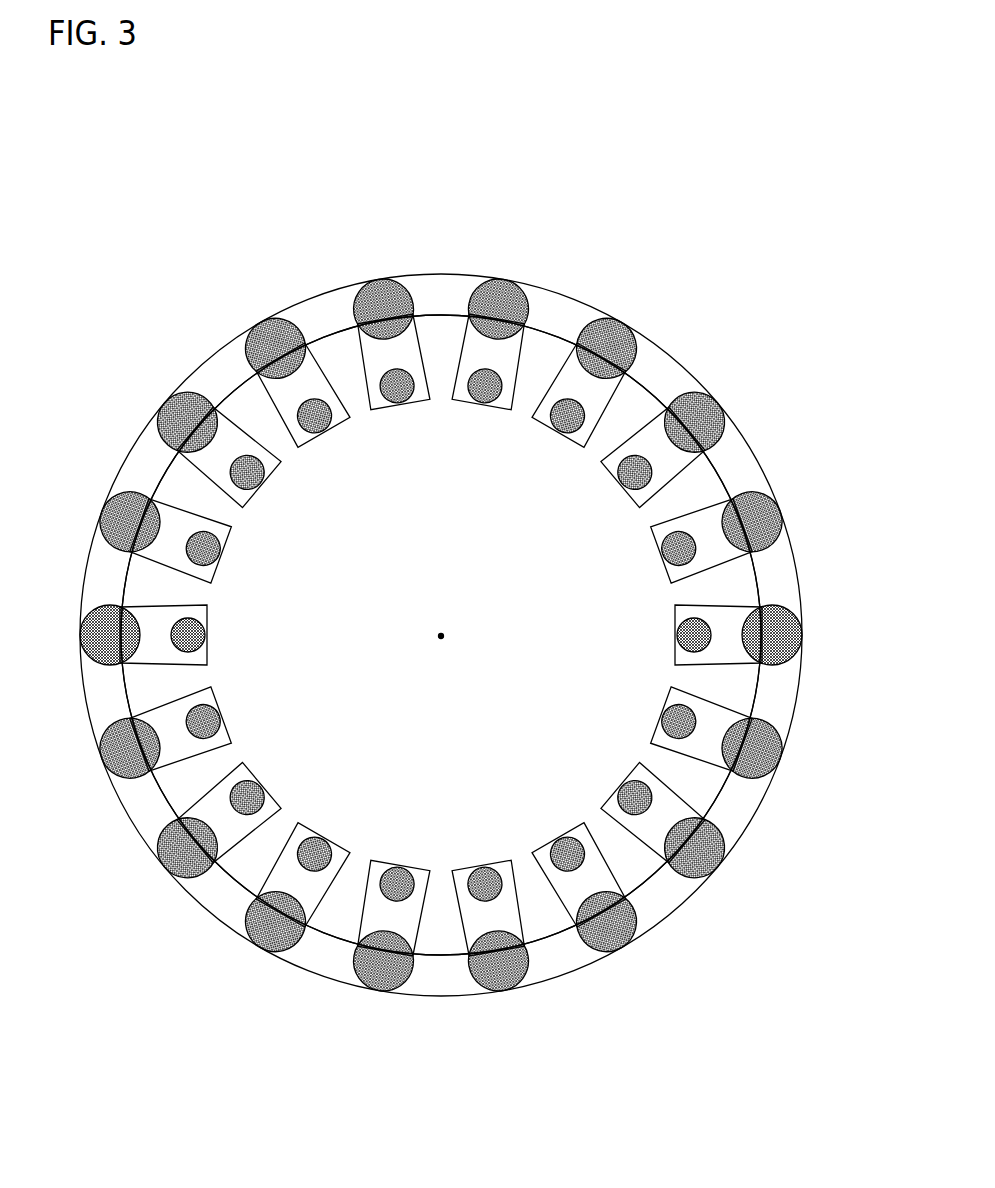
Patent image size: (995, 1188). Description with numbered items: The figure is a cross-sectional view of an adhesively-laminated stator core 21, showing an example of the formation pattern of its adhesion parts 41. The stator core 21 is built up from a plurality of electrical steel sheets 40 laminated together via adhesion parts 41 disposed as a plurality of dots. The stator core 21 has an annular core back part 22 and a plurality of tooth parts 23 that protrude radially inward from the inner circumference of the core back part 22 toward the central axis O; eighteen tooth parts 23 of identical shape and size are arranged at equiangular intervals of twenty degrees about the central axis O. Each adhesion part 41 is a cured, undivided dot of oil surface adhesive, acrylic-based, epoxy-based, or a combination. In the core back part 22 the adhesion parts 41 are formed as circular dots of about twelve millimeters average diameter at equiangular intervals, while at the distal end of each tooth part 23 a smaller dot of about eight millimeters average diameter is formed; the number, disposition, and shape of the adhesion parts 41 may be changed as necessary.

The stator core 21 is at (657, 203).
The core back part 22 is at (652, 360).
The tooth part 23 is at (566, 350).
The electrical steel sheet 40 is at (225, 363).
The adhesion part 41 is at (180, 567).
The central axis O is at (445, 633).